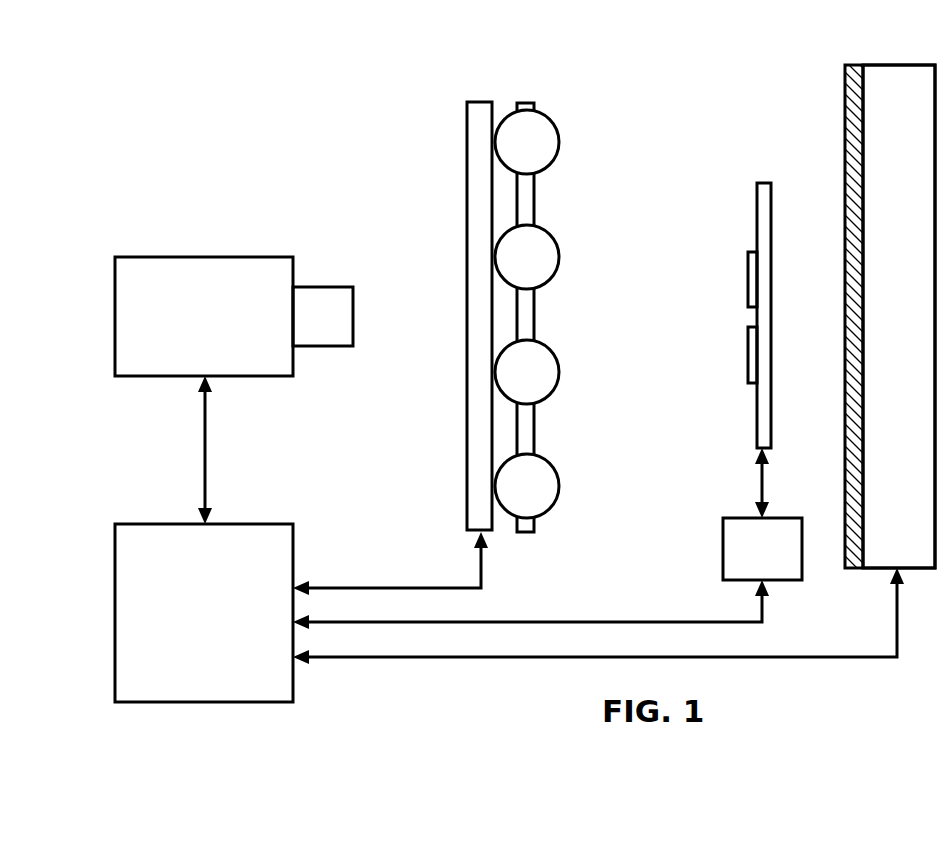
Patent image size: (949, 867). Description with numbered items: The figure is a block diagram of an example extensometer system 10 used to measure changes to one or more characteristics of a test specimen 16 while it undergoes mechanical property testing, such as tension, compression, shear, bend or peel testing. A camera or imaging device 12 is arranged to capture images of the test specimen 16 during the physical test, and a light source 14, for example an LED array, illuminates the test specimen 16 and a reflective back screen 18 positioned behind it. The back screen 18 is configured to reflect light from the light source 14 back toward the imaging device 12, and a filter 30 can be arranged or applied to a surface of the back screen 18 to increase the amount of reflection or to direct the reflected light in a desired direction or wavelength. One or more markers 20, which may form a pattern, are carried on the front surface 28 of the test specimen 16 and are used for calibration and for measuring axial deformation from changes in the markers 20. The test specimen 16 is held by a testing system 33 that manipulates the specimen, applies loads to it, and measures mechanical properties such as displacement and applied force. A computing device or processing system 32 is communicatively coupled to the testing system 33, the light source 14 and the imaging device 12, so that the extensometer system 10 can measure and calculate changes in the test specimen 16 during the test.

The extensometer system 10 is at (262, 33).
The imaging device 12 is at (235, 257).
The light source 14 is at (467, 102).
The test specimen 16 is at (771, 206).
The back screen 18 is at (913, 326).
The markers 20 is at (748, 252).
The front surface 28 is at (746, 186).
The filter 30 is at (845, 65).
The processing system 32 is at (163, 524).
The testing system 33 is at (745, 518).